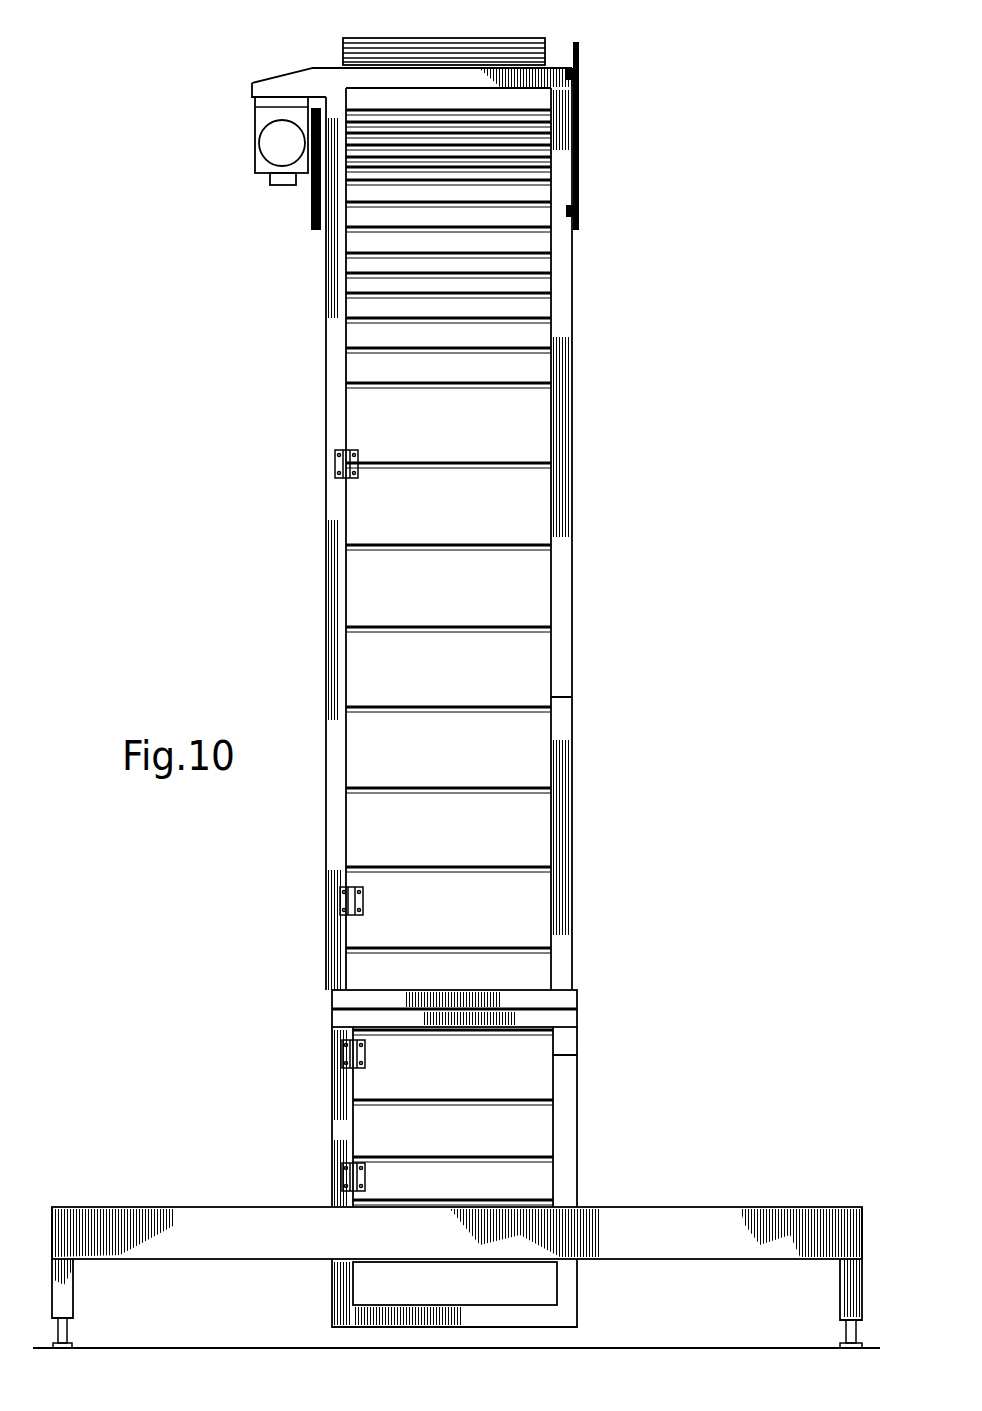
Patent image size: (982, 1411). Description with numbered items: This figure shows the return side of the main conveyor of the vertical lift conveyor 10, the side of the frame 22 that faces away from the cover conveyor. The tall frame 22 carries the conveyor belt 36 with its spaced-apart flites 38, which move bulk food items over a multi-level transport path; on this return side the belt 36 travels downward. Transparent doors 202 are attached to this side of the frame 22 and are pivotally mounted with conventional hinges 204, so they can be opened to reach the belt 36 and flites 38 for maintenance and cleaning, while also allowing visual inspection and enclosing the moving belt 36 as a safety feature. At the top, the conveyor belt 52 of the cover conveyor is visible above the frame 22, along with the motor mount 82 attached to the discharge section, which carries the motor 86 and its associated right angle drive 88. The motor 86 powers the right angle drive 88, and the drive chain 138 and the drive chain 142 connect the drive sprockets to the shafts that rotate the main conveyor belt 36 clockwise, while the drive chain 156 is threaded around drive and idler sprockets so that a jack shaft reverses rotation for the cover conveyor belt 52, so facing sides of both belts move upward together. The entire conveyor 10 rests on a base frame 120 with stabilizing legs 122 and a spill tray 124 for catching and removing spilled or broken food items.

The vertical lift conveyor 10 is at (676, 201).
The frame 22 is at (573, 571).
The conveyor belt 36 is at (527, 813).
The flites 38 is at (527, 948).
The conveyor belt 52 is at (530, 38).
The motor mount 82 is at (298, 78).
The motor 86 is at (262, 143).
The right angle drive 88 is at (258, 119).
The base frame 120 is at (733, 1215).
The stabilizing legs 122 is at (840, 1300).
The spill tray 124 is at (577, 1293).
The drive chain 138 is at (308, 188).
The drive chain 142 is at (308, 218).
The drive chain 156 is at (580, 120).
The transparent doors 202 is at (573, 697).
The hinges 204 is at (335, 463).